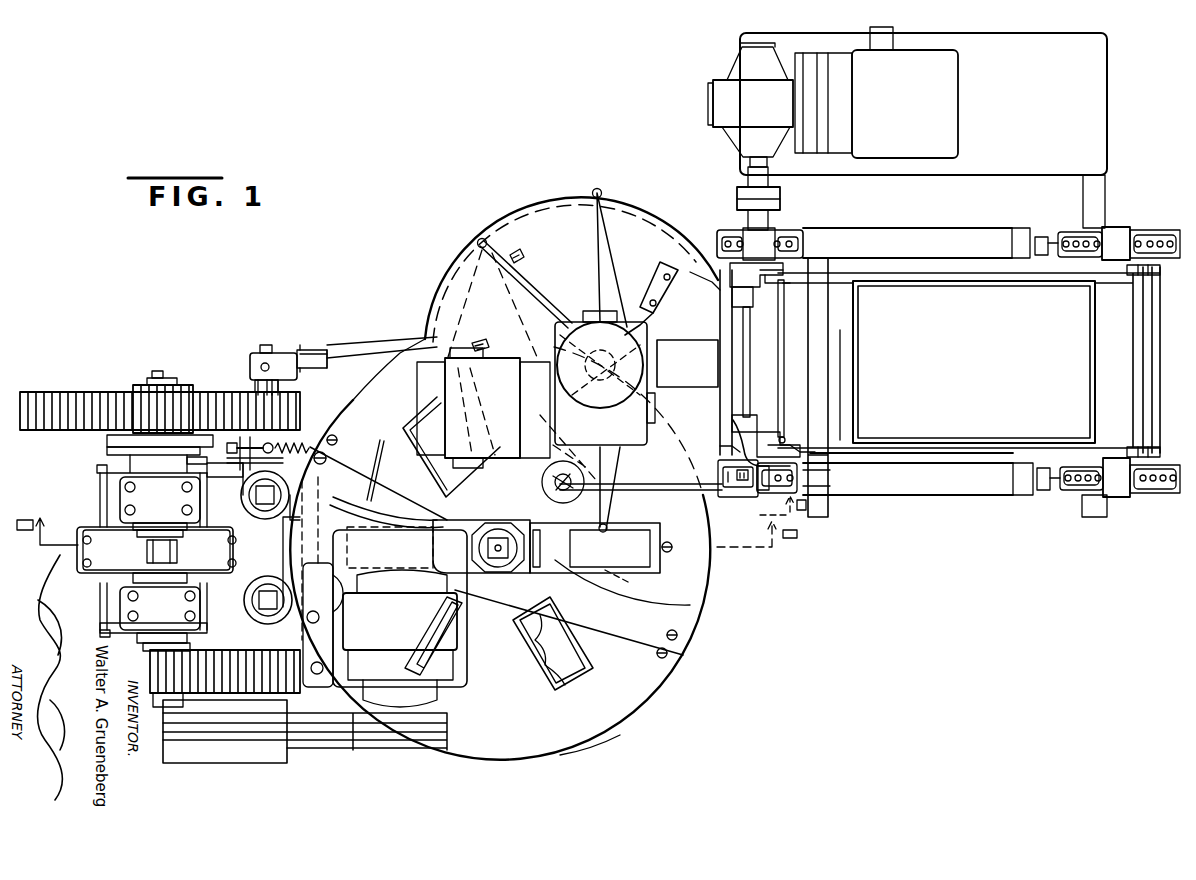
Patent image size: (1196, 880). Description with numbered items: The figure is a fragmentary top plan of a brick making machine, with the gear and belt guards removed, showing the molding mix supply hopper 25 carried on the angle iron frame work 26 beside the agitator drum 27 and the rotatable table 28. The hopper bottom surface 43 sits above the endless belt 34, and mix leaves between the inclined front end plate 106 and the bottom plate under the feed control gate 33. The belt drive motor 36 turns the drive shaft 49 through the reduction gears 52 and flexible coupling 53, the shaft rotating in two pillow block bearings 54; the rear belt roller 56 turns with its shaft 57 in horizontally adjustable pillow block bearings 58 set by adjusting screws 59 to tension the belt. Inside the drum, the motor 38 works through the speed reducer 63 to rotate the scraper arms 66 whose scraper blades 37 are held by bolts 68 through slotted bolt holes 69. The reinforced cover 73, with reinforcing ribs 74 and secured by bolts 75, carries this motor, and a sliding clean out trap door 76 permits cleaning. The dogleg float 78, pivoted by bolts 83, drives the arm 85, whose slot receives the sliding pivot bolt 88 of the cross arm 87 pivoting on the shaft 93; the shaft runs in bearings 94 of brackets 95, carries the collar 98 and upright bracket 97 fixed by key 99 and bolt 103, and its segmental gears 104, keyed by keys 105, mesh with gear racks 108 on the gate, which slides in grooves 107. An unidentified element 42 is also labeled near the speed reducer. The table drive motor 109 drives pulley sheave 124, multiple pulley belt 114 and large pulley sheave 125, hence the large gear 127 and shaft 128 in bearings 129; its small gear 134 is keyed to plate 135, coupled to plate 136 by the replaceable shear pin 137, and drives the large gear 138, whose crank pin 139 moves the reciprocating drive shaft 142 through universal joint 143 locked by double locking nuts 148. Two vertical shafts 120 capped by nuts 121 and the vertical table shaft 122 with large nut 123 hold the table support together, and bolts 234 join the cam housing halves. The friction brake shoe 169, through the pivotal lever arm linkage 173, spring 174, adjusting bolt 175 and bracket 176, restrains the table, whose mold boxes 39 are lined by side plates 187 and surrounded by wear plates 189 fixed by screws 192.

The molding mix supply hopper 25 is at (1090, 355).
The angle iron frame work 26 is at (1095, 104).
The agitator drum 27 is at (650, 228).
The rotatable table 28 is at (652, 697).
The feed control gate 33 is at (786, 352).
The endless belt 34 is at (712, 399).
The belt drive motor 36 is at (876, 92).
The scraper blade 37 is at (660, 283).
The motor 38 is at (483, 408).
The mold box 39 is at (428, 474).
The link 42 is at (612, 466).
The bottom surface of the hopper 43 is at (974, 362).
The drive shaft 49 is at (768, 165).
The reduction gears 52 is at (722, 113).
The flexible coupling 53 is at (737, 195).
The pillow block bearing 54 is at (762, 235).
The rear belt roller 56 is at (1157, 270).
The shaft 57 is at (1140, 456).
The horizontally adjustable pillow block bearing 58 is at (1115, 232).
The adjusting screw 59 is at (1042, 238).
The speed reducer 63 is at (605, 378).
The scraper arm 66 is at (648, 323).
The bolt 68 is at (667, 282).
The slotted bolt hole 69 is at (660, 306).
The reinforced cover 73 is at (555, 208).
The reinforcing rib 74 is at (605, 255).
The bolt 75 is at (597, 190).
The sliding clean out trap door 76 is at (687, 363).
The float 78 is at (548, 300).
The bolt 83 is at (525, 253).
The arm 85 is at (540, 498).
The cross arm 87 is at (698, 572).
The sliding pivot bolt 88 is at (595, 548).
The shaft 93 is at (745, 363).
The bearing 94 is at (720, 447).
The bracket 95 is at (810, 472).
The upright bracket 97 is at (722, 500).
The collar 98 is at (735, 447).
The key 99 is at (700, 475).
The bolt 103 is at (757, 500).
The segmental gear 104 is at (780, 310).
The key 105 is at (745, 312).
The inclined front end plate 106 is at (840, 347).
The groove 107 is at (785, 284).
The gear rack 108 is at (788, 440).
The table drive motor 109 is at (400, 618).
The multiple pulley belt 114 is at (320, 750).
The vertical shaft 120 is at (252, 512).
The nut 121 is at (306, 585).
The vertical table shaft 122 is at (498, 568).
The large nut 123 is at (478, 540).
The pulley sheave 124 is at (430, 752).
The large pulley sheave 125 is at (262, 765).
The large gear 127 is at (340, 690).
The shaft 128 is at (168, 553).
The bearing 129 is at (125, 503).
The small gear 134 is at (130, 408).
The plate 135 is at (107, 440).
The plate 136 is at (107, 455).
The replaceable shear pin 137 is at (198, 466).
The large gear 138 is at (33, 392).
The crank pin 139 is at (255, 392).
The reciprocating drive shaft 142 is at (385, 343).
The universal joint 143 is at (300, 350).
The double locking nuts 148 is at (340, 352).
The friction brake shoe 169 is at (362, 553).
The pivotal lever arm linkage 173 is at (306, 533).
The spring 174 is at (287, 440).
The adjusting bolt 175 is at (272, 440).
The bracket 176 is at (245, 480).
The vertical mold box side plate 187 is at (553, 643).
The horizontal wear plate 189 is at (600, 723).
The screw 192 is at (335, 447).
The bolt 234 is at (110, 530).